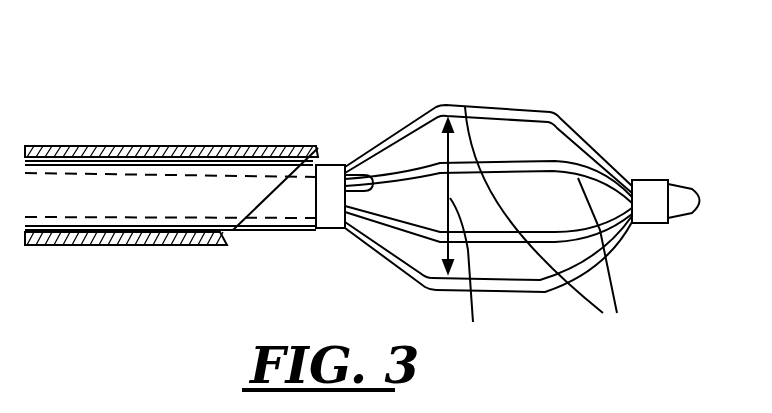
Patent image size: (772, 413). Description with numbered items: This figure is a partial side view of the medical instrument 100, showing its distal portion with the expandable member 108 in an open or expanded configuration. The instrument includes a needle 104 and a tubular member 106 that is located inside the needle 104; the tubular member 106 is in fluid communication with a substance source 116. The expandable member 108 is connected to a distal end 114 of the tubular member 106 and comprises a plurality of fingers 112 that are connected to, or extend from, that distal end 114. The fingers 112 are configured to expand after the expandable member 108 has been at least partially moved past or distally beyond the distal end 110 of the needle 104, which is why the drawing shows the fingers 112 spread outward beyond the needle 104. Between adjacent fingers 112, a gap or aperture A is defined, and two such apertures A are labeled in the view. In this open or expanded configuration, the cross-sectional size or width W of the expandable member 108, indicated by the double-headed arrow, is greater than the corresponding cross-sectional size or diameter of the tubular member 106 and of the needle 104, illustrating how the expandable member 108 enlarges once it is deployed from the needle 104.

The medical instrument 100 is at (427, 48).
The needle 104 is at (38, 243).
The tubular member 106 is at (260, 230).
The expandable member 108 is at (535, 90).
The distal end of the needle 110 is at (235, 229).
The fingers 112 is at (518, 287).
The distal end of the tubular member 114 is at (369, 172).
The substance source 116 is at (155, 158).
The width of the expandable member W is at (463, 233).
The gap or aperture A is at (518, 190).